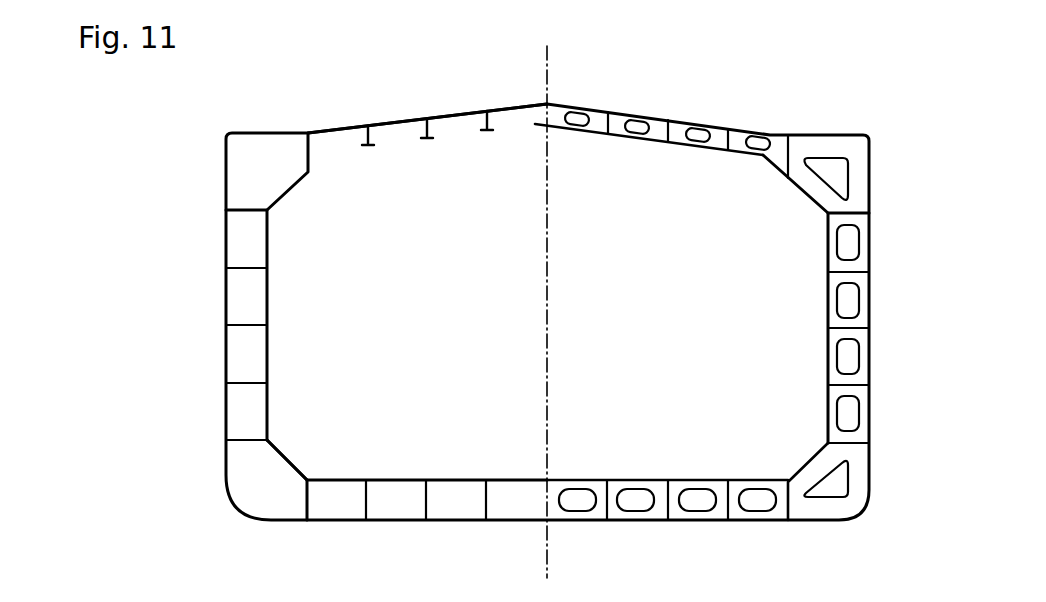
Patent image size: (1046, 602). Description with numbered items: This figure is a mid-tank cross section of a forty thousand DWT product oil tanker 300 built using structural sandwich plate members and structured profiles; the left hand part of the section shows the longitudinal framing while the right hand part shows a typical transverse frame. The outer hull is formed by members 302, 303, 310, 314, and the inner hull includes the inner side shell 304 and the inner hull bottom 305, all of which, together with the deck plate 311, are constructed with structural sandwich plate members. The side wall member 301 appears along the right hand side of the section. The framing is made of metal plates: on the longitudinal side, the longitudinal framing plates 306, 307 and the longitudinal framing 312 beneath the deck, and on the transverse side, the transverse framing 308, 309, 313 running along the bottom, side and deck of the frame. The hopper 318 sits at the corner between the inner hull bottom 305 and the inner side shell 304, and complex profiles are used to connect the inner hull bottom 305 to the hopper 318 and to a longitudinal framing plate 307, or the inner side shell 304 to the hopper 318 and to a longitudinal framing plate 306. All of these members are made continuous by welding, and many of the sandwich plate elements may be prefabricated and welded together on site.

The product oil tanker 300 is at (832, 69).
The side wall member 301 is at (869, 210).
The outer hull 302 is at (226, 313).
The outer hull 303 is at (453, 522).
The inner side shell 304 is at (267, 318).
The inner hull bottom 305 is at (445, 478).
The longitudinal framing plate 306 is at (253, 382).
The longitudinal framing plate 307 is at (368, 505).
The transverse framing 308 is at (600, 514).
The transverse framing 309 is at (858, 373).
The outer hull 310 is at (226, 495).
The deck plate 311 is at (390, 122).
The longitudinal framing 312 is at (487, 122).
The transverse framing 313 is at (623, 122).
The outer hull 314 is at (226, 193).
The hopper 318 is at (295, 460).